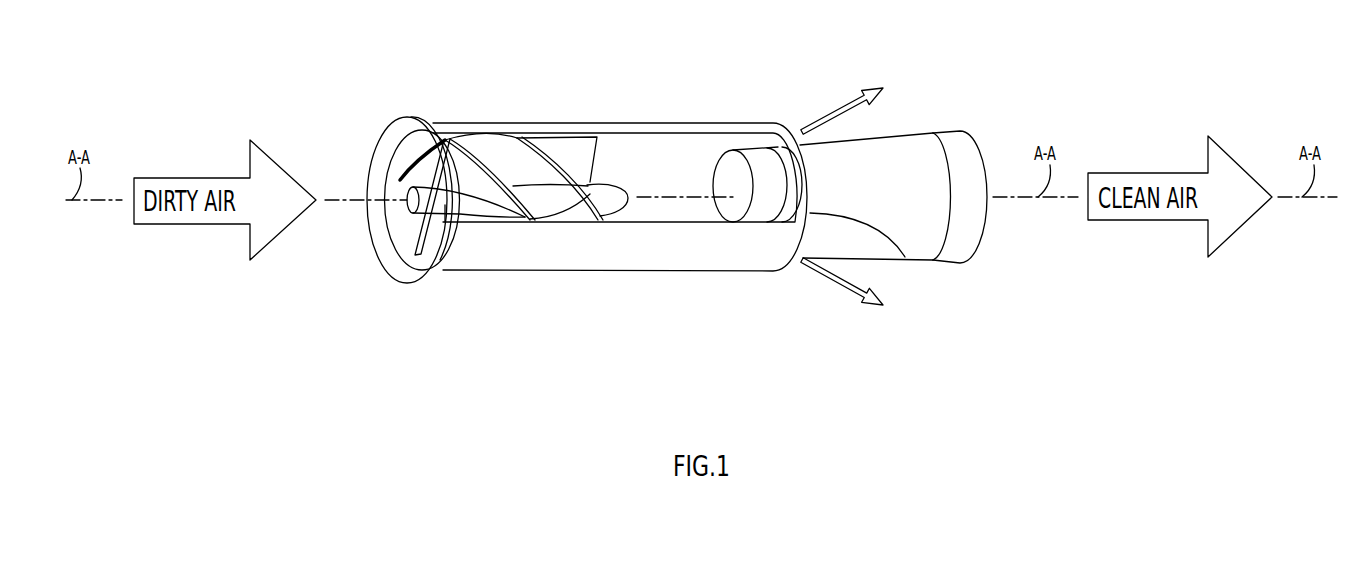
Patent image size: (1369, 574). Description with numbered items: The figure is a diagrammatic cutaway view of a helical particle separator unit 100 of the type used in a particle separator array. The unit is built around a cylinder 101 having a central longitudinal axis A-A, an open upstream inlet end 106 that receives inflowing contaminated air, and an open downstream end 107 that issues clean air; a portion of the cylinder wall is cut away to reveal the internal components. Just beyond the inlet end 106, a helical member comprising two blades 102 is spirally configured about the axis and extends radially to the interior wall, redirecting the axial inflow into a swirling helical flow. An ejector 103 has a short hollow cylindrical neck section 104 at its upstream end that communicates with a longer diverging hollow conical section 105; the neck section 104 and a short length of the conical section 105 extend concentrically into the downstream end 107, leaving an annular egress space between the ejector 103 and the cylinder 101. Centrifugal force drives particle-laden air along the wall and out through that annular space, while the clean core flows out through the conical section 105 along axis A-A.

The helical particle separator unit 100 is at (728, 58).
The cylinder 101 is at (497, 263).
The blades 102 is at (566, 150).
The ejector 103 is at (982, 237).
The neck section 104 is at (763, 213).
The conical section 105 is at (894, 147).
The upstream inlet end 106 is at (390, 266).
The downstream end 107 is at (905, 257).